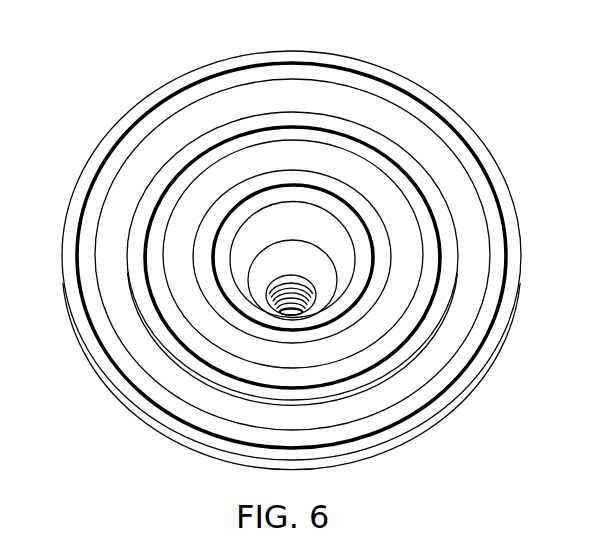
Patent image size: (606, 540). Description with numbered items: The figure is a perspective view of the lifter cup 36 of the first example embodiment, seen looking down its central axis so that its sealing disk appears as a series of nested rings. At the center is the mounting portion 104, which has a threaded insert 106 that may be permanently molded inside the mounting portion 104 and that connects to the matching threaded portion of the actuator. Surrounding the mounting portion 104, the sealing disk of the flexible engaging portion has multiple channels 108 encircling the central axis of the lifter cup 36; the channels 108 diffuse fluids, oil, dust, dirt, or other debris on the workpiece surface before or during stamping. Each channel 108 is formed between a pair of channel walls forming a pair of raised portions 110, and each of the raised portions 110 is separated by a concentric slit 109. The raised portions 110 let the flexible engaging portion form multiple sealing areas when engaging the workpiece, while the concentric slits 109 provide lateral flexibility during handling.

The lifter cup 36 is at (110, 103).
The mounting portion 104 is at (263, 217).
The threaded insert 106 is at (290, 274).
The channels 108 is at (463, 328).
The concentric slit 109 is at (400, 162).
The raised portions 110 is at (363, 243).